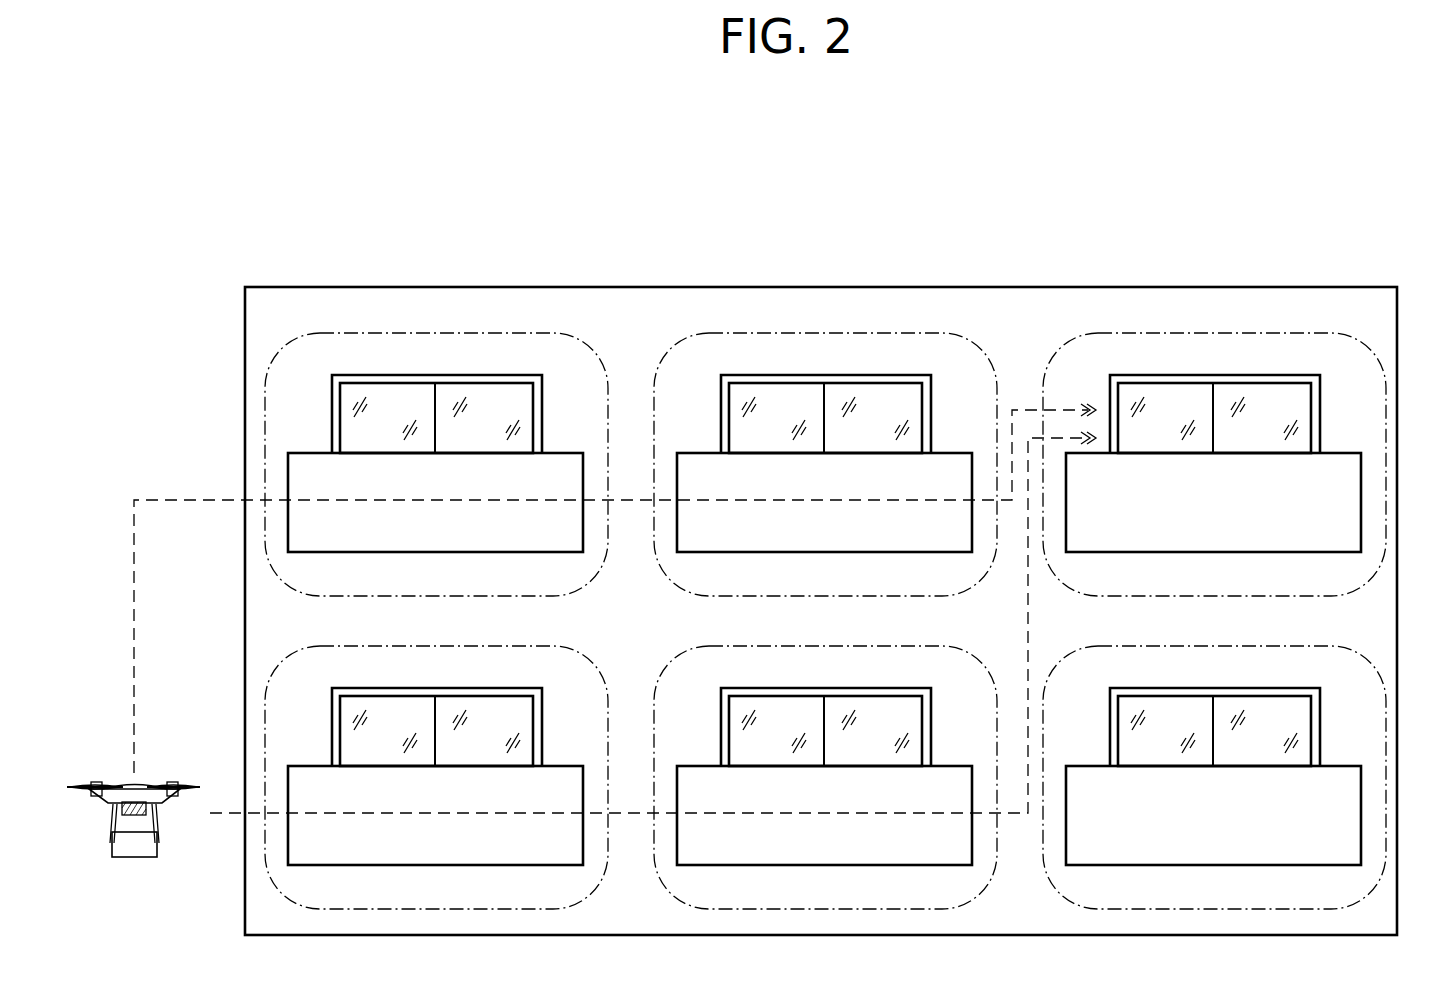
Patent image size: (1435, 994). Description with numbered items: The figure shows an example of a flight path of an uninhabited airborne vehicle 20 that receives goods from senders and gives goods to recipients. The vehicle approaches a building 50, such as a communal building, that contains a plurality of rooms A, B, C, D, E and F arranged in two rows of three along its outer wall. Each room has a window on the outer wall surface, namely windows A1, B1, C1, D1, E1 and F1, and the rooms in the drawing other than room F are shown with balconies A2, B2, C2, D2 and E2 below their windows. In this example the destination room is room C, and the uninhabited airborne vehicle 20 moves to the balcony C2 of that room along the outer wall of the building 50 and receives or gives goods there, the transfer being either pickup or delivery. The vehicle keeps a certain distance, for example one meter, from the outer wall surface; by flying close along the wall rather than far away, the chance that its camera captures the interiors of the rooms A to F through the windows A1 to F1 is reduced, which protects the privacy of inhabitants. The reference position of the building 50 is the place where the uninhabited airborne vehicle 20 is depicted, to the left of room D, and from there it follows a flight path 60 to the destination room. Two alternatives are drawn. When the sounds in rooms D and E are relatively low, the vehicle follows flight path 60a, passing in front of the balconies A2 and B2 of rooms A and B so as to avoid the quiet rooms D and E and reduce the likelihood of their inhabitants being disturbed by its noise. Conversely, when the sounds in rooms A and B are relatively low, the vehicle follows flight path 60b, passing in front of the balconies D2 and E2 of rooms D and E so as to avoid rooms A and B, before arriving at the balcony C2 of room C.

The building 50 is at (1340, 287).
The uninhabited airborne vehicle 20 is at (163, 783).
The flight path 60 is at (578, 669).
The flight path 60a is at (134, 590).
The flight path 60b is at (227, 813).
The room A is at (457, 333).
The window A1 is at (483, 383).
The balcony A2 is at (558, 453).
The room B is at (846, 333).
The window B1 is at (872, 383).
The balcony B2 is at (947, 453).
The destination room C is at (1235, 333).
The window C1 is at (1261, 383).
The balcony C2 is at (1336, 453).
The room D is at (457, 646).
The window D1 is at (483, 696).
The balcony D2 is at (558, 766).
The room E is at (846, 646).
The window E1 is at (872, 696).
The balcony E2 is at (947, 766).
The room F is at (1235, 646).
The window F1 is at (1261, 696).